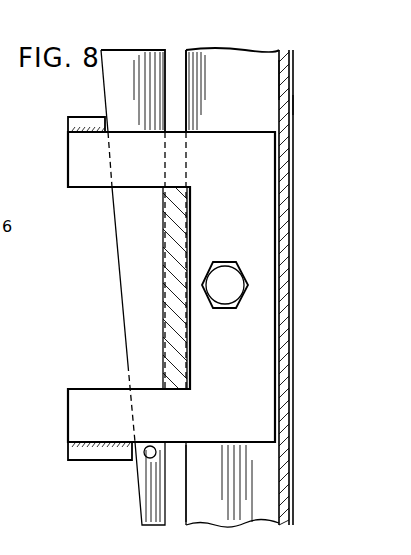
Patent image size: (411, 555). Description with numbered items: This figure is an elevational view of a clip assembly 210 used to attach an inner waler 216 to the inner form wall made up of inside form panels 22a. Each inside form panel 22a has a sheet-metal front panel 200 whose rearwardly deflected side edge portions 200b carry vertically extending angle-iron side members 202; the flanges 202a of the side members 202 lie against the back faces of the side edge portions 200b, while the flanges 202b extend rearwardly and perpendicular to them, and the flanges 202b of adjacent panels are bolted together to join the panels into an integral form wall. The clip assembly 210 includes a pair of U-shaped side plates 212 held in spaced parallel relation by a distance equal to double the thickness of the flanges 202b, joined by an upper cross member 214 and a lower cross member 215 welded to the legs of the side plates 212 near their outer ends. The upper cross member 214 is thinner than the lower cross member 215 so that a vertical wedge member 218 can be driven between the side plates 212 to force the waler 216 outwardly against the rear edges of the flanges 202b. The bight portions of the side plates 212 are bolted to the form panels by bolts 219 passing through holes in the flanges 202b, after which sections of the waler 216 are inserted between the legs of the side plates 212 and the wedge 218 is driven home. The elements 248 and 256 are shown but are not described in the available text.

The front panel 200 is at (294, 330).
The side edge portions 200b is at (294, 104).
The side members 202 is at (252, 107).
The flanges of side members 202a is at (288, 82).
The flanges 202b is at (215, 63).
The clip assembly 210 is at (254, 216).
The side plates 212 is at (253, 375).
The upper cross member 214 is at (72, 125).
The lower cross member 215 is at (72, 453).
The inner waler 216 is at (173, 247).
The wedge member 218 is at (135, 63).
The bolts 219 is at (240, 282).
The inside form panel 22a is at (258, 472).
The lower right member 248 is at (232, 498).
The lower left member 256 is at (132, 498).